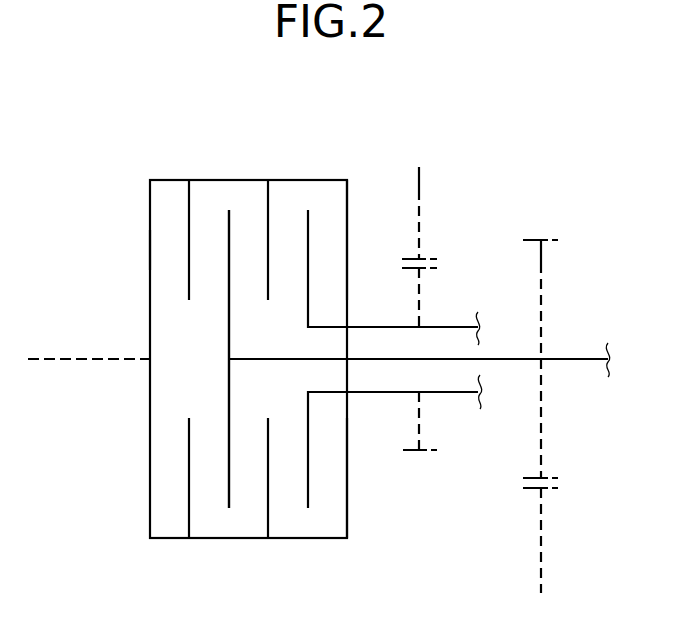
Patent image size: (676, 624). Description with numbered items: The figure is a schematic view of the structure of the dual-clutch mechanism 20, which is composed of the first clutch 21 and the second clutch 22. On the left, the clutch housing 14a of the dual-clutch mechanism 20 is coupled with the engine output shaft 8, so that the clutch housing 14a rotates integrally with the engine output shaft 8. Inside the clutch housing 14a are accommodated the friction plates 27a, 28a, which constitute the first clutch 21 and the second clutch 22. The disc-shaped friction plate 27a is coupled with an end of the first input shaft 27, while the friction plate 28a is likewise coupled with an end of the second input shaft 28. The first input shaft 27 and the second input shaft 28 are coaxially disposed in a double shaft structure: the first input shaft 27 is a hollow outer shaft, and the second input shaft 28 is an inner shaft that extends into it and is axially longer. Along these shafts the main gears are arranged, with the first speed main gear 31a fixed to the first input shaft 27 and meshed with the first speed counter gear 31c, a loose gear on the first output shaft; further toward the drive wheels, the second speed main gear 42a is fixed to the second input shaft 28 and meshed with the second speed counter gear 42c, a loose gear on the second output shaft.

The dual-clutch mechanism 20 is at (576, 114).
The second clutch 22 is at (225, 159).
The first clutch 21 is at (308, 159).
The clutch housing 14a is at (150, 249).
The engine output shaft 8 is at (80, 361).
The second input shaft 28 is at (590, 362).
The friction plate 28a is at (229, 386).
The friction plate 27a is at (308, 326).
The first input shaft 27 is at (379, 325).
The first speed counter gear 31c is at (421, 200).
The first speed main gear 31a is at (421, 285).
The second speed main gear 42a is at (543, 270).
The second speed counter gear 42c is at (543, 533).